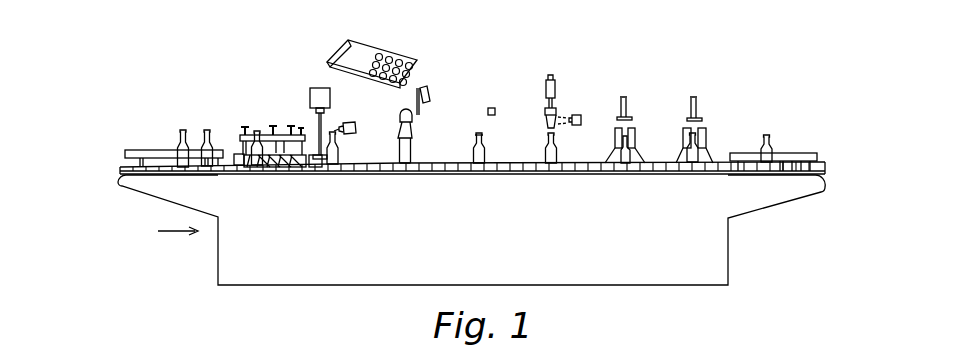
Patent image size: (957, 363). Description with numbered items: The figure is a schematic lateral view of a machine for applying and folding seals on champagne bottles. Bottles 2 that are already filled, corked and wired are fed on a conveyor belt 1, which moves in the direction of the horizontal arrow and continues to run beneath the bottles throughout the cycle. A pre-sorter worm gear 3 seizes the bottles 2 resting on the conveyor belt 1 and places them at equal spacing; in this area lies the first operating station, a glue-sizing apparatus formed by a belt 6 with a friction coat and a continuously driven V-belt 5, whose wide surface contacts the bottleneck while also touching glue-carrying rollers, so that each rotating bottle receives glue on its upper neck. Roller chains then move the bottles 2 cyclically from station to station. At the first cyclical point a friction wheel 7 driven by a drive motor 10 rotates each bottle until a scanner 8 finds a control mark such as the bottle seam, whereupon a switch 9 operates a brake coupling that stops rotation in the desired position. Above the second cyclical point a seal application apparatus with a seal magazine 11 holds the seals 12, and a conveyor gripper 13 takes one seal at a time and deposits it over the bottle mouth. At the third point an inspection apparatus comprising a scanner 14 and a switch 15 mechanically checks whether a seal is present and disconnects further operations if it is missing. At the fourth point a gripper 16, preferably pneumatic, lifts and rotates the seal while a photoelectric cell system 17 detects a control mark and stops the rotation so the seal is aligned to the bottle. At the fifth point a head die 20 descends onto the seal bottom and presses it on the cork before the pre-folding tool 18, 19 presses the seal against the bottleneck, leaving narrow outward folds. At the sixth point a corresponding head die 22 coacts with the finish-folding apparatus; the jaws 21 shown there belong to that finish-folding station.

The conveyor belt 1 is at (162, 168).
The champagne bottles 2 is at (182, 129).
The pre-sorter worm gear 3 is at (244, 170).
The V-belt 5 is at (243, 140).
The belt 6 is at (237, 168).
The friction wheel 7 is at (313, 168).
The scanner 8 is at (340, 131).
The switch 9 is at (355, 127).
The drive motor 10 is at (311, 95).
The seal magazine 11 is at (364, 53).
The seals 12 is at (403, 58).
The conveyor gripper 13 is at (411, 117).
The scanner 14 is at (485, 134).
The switch 15 is at (494, 108).
The gripper 16 is at (550, 80).
The photoelectric cell system 17 is at (578, 114).
The pre-folding tool 18 is at (634, 149).
The pre-folding tool 19 is at (615, 148).
The head die 20 is at (625, 97).
The clamping jaws 21 is at (715, 136).
The head die 22 is at (697, 98).